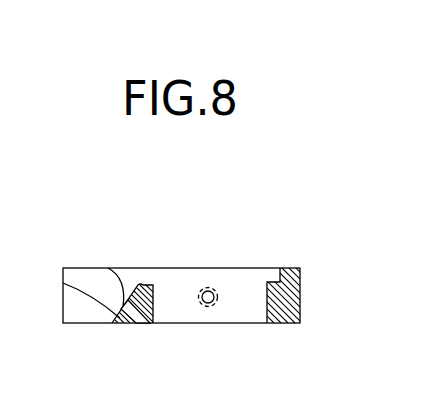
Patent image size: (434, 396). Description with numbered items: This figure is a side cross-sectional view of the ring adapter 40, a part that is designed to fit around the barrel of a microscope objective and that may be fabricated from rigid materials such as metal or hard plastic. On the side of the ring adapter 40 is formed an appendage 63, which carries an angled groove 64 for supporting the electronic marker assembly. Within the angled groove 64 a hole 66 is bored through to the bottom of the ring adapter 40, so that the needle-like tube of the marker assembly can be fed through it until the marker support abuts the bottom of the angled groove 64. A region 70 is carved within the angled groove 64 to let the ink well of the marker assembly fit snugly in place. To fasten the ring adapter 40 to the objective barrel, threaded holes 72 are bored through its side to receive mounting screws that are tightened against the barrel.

The ring adapter 40 is at (120, 230).
The region 70 is at (84, 279).
The angled groove 64 is at (138, 282).
The appendage 63 is at (123, 332).
The hole 66 is at (136, 312).
The threaded holes 72 is at (214, 296).